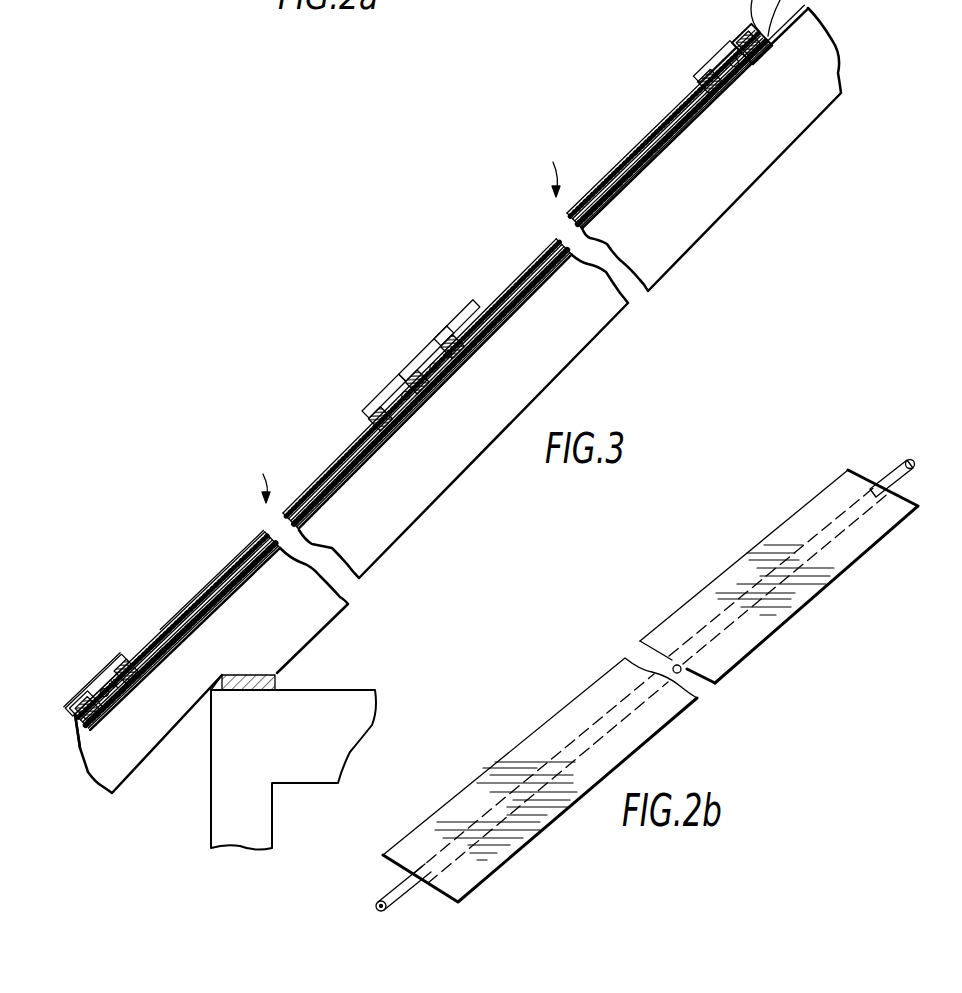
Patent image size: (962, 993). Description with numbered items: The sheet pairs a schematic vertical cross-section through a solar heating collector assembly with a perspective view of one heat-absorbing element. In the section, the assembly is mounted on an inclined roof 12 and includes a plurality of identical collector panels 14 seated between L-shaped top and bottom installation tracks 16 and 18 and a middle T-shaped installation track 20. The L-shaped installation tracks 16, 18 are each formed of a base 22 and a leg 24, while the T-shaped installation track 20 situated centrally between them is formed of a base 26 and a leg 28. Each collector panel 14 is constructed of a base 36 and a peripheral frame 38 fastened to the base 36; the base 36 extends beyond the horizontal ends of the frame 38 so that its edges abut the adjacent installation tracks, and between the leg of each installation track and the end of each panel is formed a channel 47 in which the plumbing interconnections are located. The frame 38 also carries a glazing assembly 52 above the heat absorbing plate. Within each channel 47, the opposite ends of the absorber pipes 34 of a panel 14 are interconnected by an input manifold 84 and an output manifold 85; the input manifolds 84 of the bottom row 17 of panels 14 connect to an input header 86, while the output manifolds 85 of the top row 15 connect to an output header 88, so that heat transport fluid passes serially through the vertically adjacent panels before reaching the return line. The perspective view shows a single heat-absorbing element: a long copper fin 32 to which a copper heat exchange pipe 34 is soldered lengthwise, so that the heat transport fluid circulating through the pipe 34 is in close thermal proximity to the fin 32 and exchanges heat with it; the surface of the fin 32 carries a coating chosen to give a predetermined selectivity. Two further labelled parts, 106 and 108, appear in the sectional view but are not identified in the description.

In FIG. 3, the inclined roof 12 is at (642, 249).
In FIG. 3, the collector panel 14 is at (657, 157).
In FIG. 3, the top row 15 is at (543, 166).
In FIG. 3, the L-shaped top installation track 16 is at (745, 32).
In FIG. 3, the bottom row 17 is at (253, 475).
In FIG. 3, the L-shaped bottom installation track 18 is at (93, 703).
In FIG. 3, the middle T-shaped installation track 20 is at (433, 383).
In FIG. 3, the base 22 is at (108, 730).
In FIG. 3, the leg 24 is at (82, 712).
In FIG. 3, the base 26 is at (427, 387).
In FIG. 3, the leg 28 is at (420, 363).
In FIG. 2b, the copper fin 32 is at (743, 647).
In FIG. 2b, the copper heat exchange pipe 34 is at (381, 900).
In FIG. 3, the base 36 is at (109, 654).
In FIG. 3, the peripheral frame 38 is at (130, 670).
In FIG. 3, the channel 47 is at (713, 62).
In FIG. 3, the glazing assembly 52 is at (217, 578).
In FIG. 3, the input manifold 84 is at (447, 360).
In FIG. 3, the output manifold 85 is at (720, 80).
In FIG. 3, the input header 86 is at (113, 707).
In FIG. 3, the output header 88 is at (724, 54).
In FIG. 3, the rail end 106 is at (82, 742).
In FIG. 3, the rail end 108 is at (351, 392).